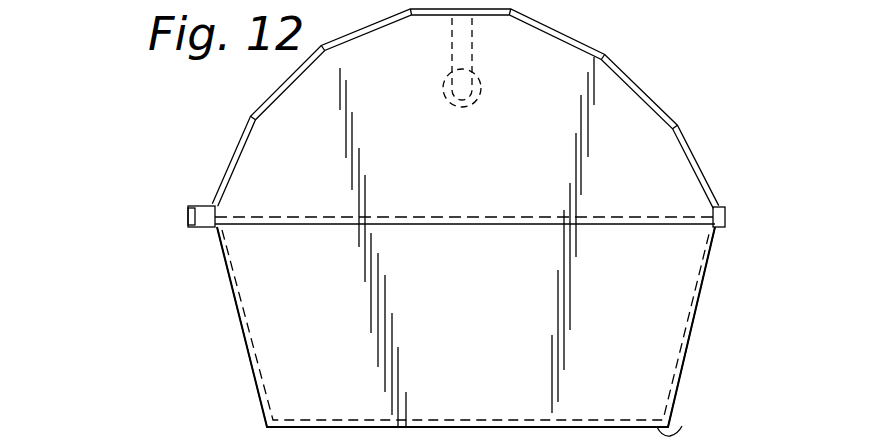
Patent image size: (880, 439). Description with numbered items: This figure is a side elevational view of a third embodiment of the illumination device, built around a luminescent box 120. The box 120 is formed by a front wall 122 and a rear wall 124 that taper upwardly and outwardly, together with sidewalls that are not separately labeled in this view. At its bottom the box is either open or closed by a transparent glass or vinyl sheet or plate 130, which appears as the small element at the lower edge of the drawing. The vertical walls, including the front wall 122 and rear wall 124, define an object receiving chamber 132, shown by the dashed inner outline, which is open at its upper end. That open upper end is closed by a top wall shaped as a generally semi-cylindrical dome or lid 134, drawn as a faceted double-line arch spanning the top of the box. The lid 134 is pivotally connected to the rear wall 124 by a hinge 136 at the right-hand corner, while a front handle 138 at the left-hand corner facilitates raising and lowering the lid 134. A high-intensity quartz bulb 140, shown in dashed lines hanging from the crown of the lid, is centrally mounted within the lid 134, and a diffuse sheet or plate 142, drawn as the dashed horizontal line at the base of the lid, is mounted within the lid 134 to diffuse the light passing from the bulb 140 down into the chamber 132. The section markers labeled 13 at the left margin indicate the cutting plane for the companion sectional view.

The section line 13- 13 is at (80, 27).
The luminescent box 120 is at (200, 283).
The front wall 122 is at (248, 358).
The rear wall 124 is at (690, 345).
The transparent glass or vinyl sheet or plate 130 is at (680, 424).
The object receiving chamber 132 is at (667, 302).
The dome or lid 134 is at (647, 90).
The hinge 136 is at (720, 223).
The front handle 138 is at (188, 223).
The high-intensity quartz bulb 140 is at (478, 98).
The diffuse sheet or plate 142 is at (378, 215).